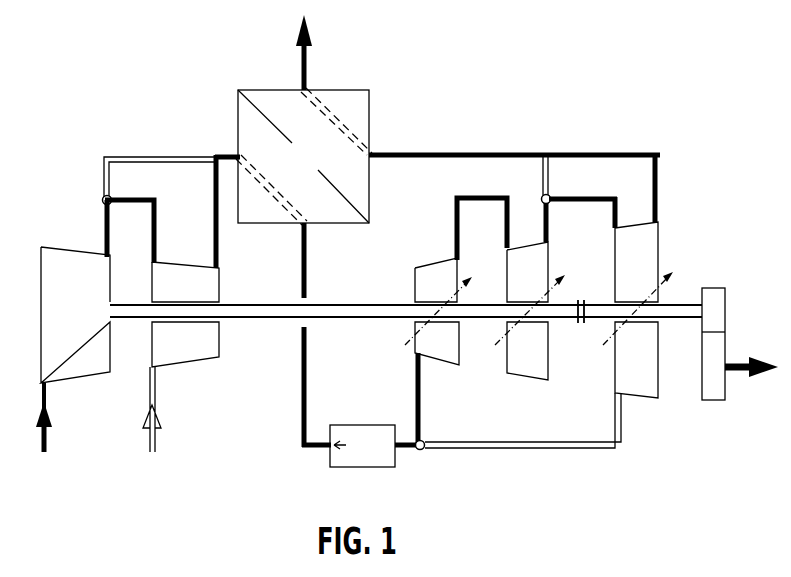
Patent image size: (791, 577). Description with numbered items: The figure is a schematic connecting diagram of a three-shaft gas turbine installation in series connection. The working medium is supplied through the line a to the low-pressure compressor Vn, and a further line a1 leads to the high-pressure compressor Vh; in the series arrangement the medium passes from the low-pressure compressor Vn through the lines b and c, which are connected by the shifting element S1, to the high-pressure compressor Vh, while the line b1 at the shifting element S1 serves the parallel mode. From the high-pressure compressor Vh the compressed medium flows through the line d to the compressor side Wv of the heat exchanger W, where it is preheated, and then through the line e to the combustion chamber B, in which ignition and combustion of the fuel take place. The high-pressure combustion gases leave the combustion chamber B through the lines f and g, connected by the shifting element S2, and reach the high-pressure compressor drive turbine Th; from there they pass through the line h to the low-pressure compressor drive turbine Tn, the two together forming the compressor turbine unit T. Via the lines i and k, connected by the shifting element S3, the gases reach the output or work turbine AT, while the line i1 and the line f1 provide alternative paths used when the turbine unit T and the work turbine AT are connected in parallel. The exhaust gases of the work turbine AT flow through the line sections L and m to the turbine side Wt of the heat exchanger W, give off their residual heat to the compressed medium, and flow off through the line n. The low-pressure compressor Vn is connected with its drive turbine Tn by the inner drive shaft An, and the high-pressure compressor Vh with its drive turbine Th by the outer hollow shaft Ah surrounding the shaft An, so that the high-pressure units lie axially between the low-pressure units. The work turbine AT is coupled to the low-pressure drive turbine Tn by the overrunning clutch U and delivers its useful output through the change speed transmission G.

The line a is at (48, 441).
The line a1 is at (157, 442).
The low-pressure compressor Vn is at (87, 376).
The high-pressure compressor Vh is at (220, 338).
The line b is at (104, 236).
The line b1 is at (148, 155).
The line c is at (155, 237).
The line d is at (213, 204).
The shifting element S1 is at (102, 199).
The shifting element S2 is at (422, 450).
The shifting element S3 is at (550, 196).
The heat exchanger W is at (278, 134).
The compressor side of the heat exchanger Wv is at (245, 123).
The turbine side of the heat exchanger Wt is at (352, 100).
The line n is at (300, 60).
The line section m is at (430, 150).
The line section L is at (617, 152).
The line h is at (470, 196).
The line i is at (543, 218).
The line i1 is at (541, 183).
The line k is at (581, 204).
The high-pressure compressor drive turbine Th is at (440, 358).
The low-pressure compressor drive turbine Tn is at (543, 367).
The compressor drive turbine T is at (481, 350).
The output or work turbine AT is at (658, 398).
The overrunning clutch U is at (582, 300).
The transmission G is at (718, 342).
The inner drive shaft An is at (347, 303).
The outer hollow shaft Ah is at (355, 322).
The line e is at (302, 409).
The combustion chamber B is at (360, 425).
The line f is at (407, 438).
The line g is at (423, 421).
The line f1 is at (566, 452).